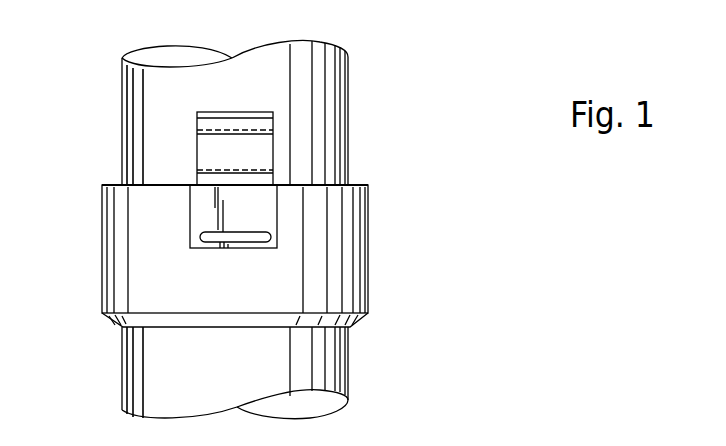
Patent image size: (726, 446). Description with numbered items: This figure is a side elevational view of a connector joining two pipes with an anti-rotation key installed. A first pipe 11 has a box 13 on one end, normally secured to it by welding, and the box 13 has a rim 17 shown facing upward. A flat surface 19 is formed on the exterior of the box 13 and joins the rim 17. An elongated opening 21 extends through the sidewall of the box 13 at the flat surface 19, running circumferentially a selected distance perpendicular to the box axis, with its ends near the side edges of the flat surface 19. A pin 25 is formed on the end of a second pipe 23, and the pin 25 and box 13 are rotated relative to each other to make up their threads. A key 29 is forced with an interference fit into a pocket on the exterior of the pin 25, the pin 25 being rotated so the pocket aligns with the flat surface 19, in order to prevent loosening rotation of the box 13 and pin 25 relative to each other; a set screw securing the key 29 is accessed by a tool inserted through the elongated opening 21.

The first pipe 11 is at (112, 379).
The box 13 is at (102, 285).
The rim 17 is at (109, 183).
The flat surface 19 is at (201, 217).
The elongated opening 21 is at (278, 236).
The second pipe 23 is at (362, 66).
The pin 25 is at (348, 108).
The key 29 is at (196, 122).